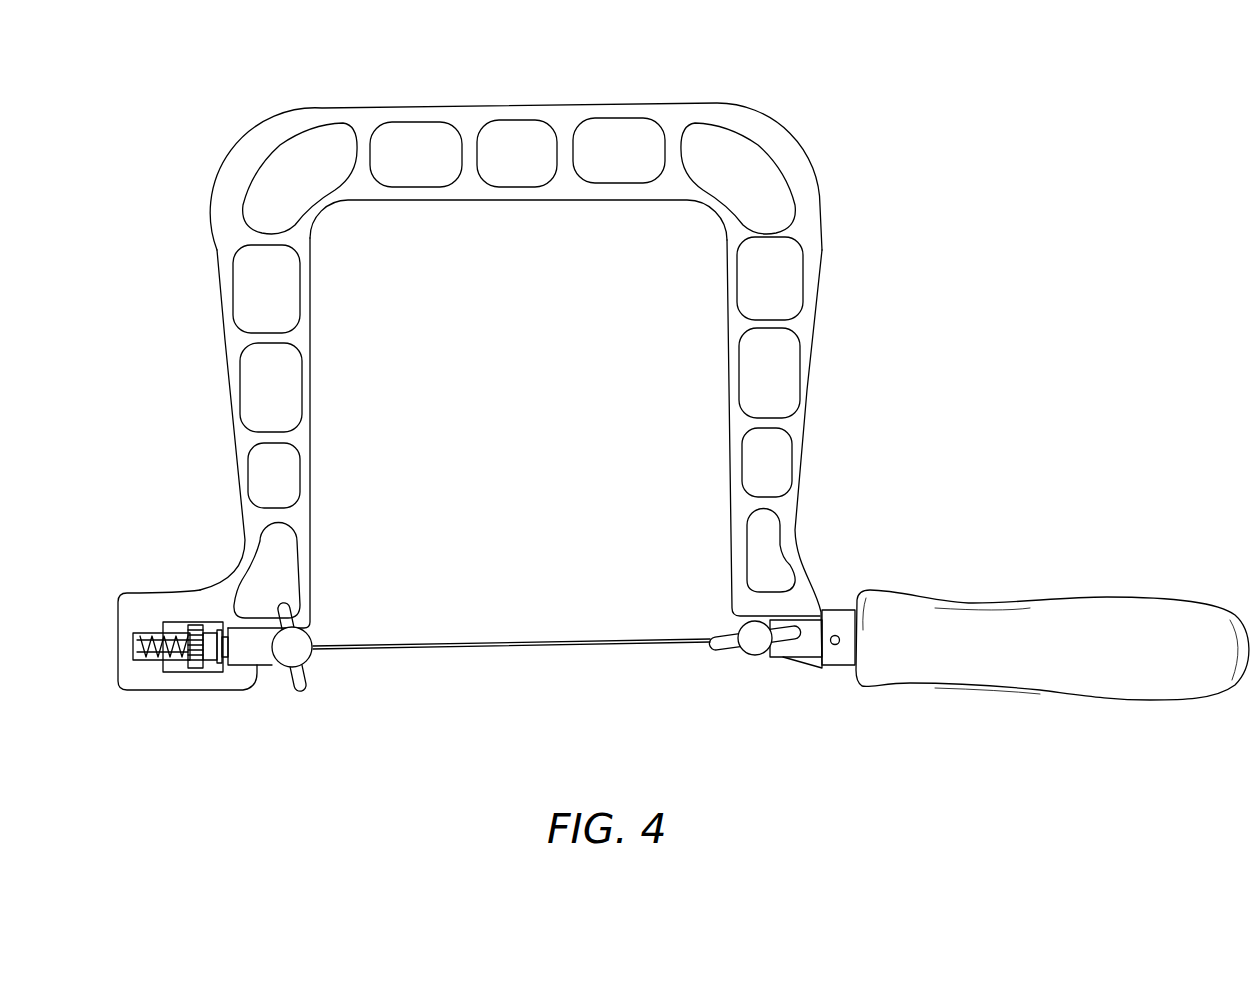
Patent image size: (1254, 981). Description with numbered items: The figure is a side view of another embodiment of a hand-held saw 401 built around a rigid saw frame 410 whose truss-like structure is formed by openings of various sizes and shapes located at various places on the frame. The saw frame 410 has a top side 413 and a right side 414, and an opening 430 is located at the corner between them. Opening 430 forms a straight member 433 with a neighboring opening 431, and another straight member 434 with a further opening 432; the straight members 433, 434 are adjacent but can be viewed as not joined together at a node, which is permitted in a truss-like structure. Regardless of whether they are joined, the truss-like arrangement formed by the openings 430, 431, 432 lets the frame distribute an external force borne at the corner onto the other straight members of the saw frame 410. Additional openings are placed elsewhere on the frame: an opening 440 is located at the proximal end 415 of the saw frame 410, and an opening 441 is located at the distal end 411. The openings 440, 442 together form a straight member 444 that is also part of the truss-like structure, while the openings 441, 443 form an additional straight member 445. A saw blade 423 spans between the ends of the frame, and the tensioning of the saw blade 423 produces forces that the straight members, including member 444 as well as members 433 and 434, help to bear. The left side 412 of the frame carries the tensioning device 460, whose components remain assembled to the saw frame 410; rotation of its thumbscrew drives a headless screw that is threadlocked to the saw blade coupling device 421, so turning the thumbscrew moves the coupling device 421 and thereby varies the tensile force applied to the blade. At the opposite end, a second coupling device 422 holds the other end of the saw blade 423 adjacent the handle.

The hand-held saw 401 is at (936, 182).
The rigid saw frame 410 is at (810, 388).
The distal end 411 is at (227, 690).
The first arm 412 is at (322, 393).
The top side 413 is at (563, 209).
The right side 414 is at (716, 384).
The proximal end 415 is at (803, 660).
The saw blade coupling device 421 is at (313, 663).
The second thumb screw 422 is at (738, 653).
The saw blade 423 is at (553, 645).
The opening 430 is at (733, 192).
The opening 431 is at (617, 150).
The opening 432 is at (778, 285).
The straight member 433 is at (670, 143).
The straight member 434 is at (772, 233).
The opening 440 is at (762, 555).
The opening 441 is at (280, 548).
The opening 442 is at (760, 458).
The opening 443 is at (295, 485).
The straight member 444 is at (760, 503).
The straight member 445 is at (285, 515).
The tensioning device 460 is at (186, 578).